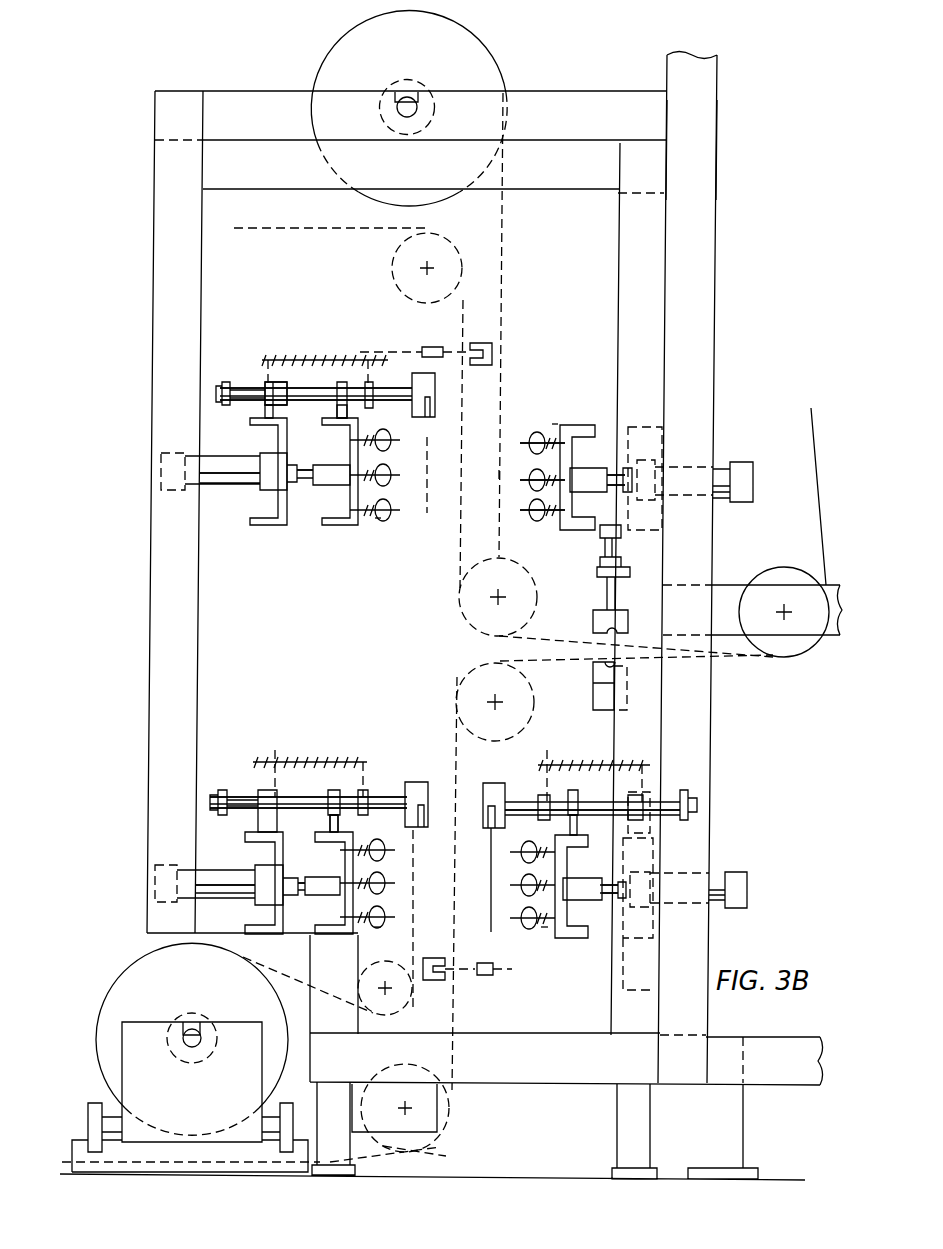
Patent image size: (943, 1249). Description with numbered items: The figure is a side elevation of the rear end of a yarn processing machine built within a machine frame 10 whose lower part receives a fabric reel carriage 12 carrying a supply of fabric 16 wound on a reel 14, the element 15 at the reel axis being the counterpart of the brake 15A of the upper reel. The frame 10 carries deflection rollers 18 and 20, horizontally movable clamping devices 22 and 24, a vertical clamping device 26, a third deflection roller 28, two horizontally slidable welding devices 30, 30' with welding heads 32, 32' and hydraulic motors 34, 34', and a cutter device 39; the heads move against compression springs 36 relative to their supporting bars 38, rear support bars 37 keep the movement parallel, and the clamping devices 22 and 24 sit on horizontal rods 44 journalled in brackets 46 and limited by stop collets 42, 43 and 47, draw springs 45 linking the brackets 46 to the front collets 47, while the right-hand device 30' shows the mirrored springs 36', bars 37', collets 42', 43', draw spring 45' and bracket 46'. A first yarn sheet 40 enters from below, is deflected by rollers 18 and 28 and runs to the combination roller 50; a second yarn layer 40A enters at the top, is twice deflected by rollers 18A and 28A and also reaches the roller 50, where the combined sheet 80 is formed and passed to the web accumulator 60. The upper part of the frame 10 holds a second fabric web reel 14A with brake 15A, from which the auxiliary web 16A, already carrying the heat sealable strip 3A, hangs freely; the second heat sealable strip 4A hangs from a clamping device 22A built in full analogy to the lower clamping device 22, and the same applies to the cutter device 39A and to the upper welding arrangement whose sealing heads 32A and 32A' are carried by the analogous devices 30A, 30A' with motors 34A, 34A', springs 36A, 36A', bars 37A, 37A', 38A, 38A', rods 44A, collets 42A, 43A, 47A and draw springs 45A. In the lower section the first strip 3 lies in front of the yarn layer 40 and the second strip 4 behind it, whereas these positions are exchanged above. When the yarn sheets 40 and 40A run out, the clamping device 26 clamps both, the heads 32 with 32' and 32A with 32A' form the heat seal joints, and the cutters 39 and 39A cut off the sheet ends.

The machine frame 10 is at (156, 522).
The fabric reel carriage 12 is at (125, 1125).
The reel 14 is at (128, 978).
The roll core spindle 15 is at (190, 1020).
The supply of fabric 16 is at (300, 972).
The deflection roller 18 is at (425, 1148).
The deflection roller 20 is at (405, 1006).
The horizontally movable clamping device 22 is at (408, 782).
The horizontally movable clamping device 24 is at (500, 790).
The vertical clamping device 26 is at (580, 582).
The third deflection roller 28 is at (470, 675).
The horizontally slidable welding device 30 is at (301, 841).
The welding heads 32 is at (376, 883).
The hydraulic motors 34 is at (247, 865).
The compression springs 36 is at (387, 938).
The rear support bars 37 is at (249, 883).
The supporting bars 38 is at (322, 841).
The cutter device 39 is at (455, 980).
The sheet of parallel yarns 40 is at (455, 690).
The adjustable stop collet 42 is at (308, 759).
The adjustable stop collet 43 is at (215, 775).
The horizontal rods 44 is at (318, 806).
The draw springs 45 is at (310, 756).
The brackets 46 is at (405, 607).
The front stop collets 47 is at (356, 815).
The combination roller 50 is at (797, 656).
The web accumulator 60 is at (737, 84).
The combined sheet 80 is at (818, 524).
The first heat sealable strip 3 is at (418, 832).
The second heat sealable strip 4 is at (485, 912).
The second fabric web reel 14A is at (488, 80).
The brake 15A is at (410, 92).
The auxiliary web 16A is at (505, 242).
The deflection roller 18A is at (392, 276).
The clamping device 22A is at (396, 362).
The deflection roller 28A is at (460, 611).
The second clamp assembly 30A is at (306, 482).
The sealing heads 32A is at (406, 490).
The second actuating cylinder 34A is at (255, 483).
The second roller shaft 36A is at (392, 537).
The second bracket 37A is at (242, 485).
The second bracket 38A is at (344, 494).
The cutter device 39A is at (497, 342).
The yarn layer 40A is at (309, 243).
The second shaft 42A is at (280, 380).
The second end stop 43A is at (226, 382).
The second collar 44A is at (218, 396).
The second threaded rod 45A is at (316, 358).
The second collar 47A is at (373, 410).
The heat sealable strip 3A is at (497, 470).
The second heat sealable strip 4A is at (432, 470).
The opposite second clamp assembly 30A' is at (616, 503).
The sealing heads 32A' is at (536, 452).
The opposite second actuating cylinder 34A' is at (671, 462).
The opposite second roller shaft 36A' is at (578, 396).
The opposite second bracket 37A' is at (671, 473).
The opposite second bracket 38A' is at (591, 461).
The horizontally slidable welding device 30' is at (628, 851).
The sealing heads 32' is at (521, 885).
The opposite actuating cylinder 34' is at (655, 909).
The opposite roller shaft 36' is at (561, 944).
The opposite bracket 37' is at (636, 914).
The opposite shaft 42' is at (592, 772).
The opposite end stop 43' is at (715, 791).
The opposite threaded rod 45' is at (594, 767).
The opposite slide block 46' is at (661, 790).